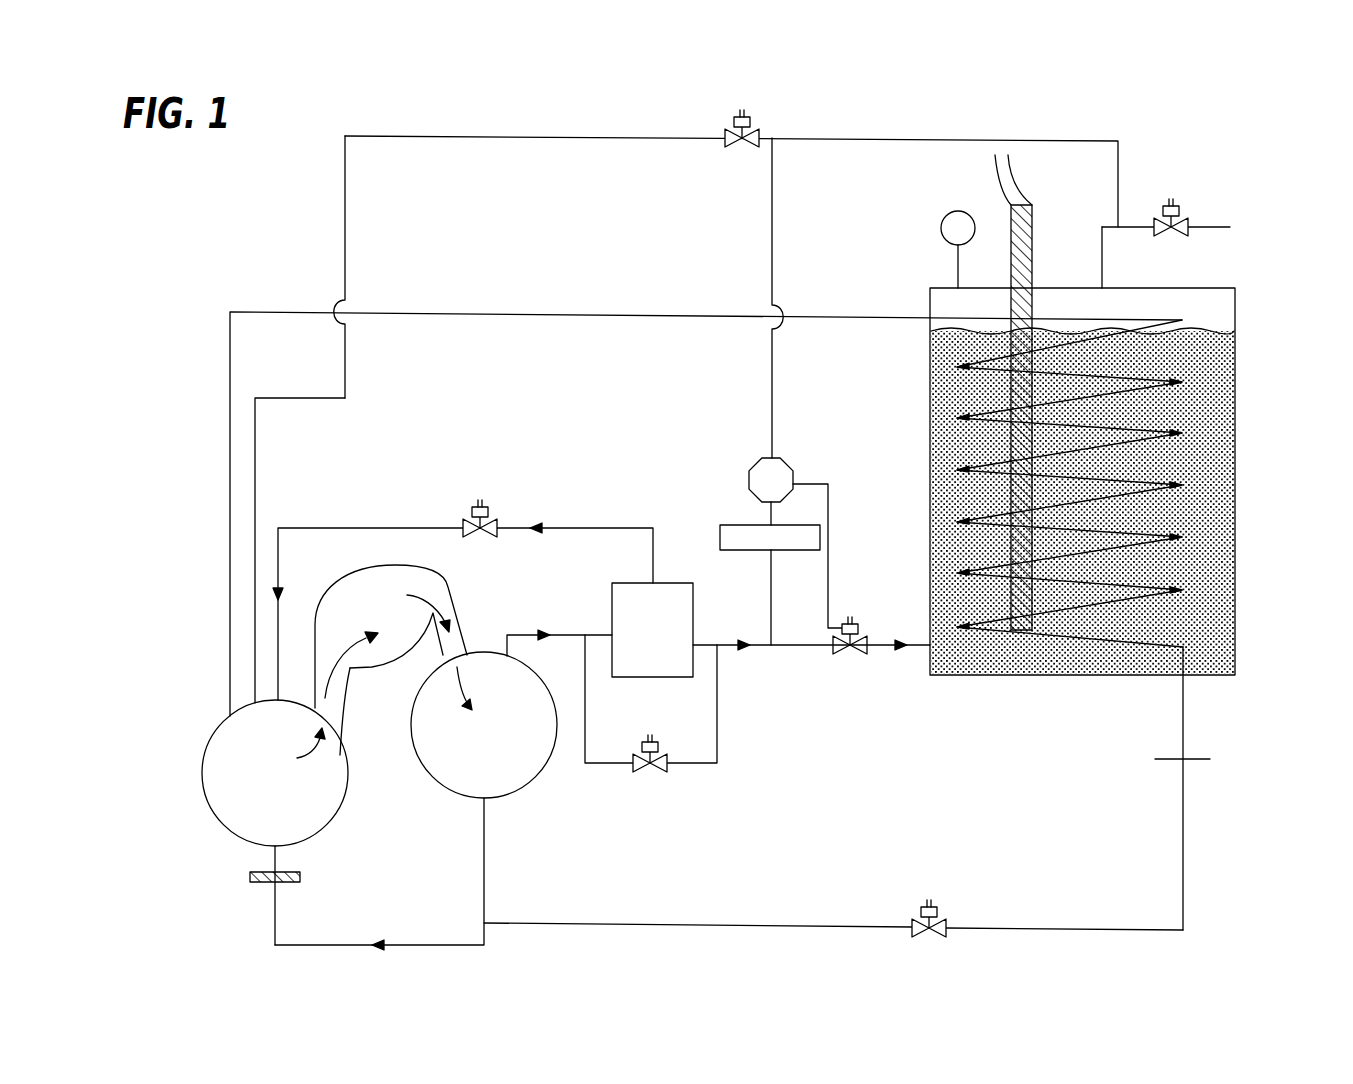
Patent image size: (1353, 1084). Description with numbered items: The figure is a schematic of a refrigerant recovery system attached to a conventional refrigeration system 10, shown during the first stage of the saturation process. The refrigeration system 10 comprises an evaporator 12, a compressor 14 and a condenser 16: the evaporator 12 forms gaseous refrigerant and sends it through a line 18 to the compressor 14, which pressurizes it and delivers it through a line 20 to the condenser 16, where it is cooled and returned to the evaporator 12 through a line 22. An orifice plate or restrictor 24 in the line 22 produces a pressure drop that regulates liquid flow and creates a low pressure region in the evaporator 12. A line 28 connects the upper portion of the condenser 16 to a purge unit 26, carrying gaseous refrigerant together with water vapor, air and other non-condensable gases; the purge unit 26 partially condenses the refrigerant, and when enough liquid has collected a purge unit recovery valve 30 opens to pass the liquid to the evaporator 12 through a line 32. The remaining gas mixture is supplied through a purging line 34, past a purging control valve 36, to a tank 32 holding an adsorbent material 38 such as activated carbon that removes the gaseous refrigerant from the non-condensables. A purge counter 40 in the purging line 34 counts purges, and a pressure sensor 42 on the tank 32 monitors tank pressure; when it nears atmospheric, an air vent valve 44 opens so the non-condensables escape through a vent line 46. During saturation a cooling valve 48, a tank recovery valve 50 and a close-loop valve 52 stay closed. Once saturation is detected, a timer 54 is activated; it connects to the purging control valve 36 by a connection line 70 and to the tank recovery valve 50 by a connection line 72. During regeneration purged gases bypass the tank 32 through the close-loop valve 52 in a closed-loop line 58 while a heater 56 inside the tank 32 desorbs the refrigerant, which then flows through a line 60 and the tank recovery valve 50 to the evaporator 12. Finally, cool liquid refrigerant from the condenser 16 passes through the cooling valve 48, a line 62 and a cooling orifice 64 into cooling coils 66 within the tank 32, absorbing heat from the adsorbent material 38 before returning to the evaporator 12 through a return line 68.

The refrigeration system 10 is at (208, 710).
The evaporator 12 is at (335, 820).
The compressor 14 is at (372, 668).
The condenser 16 is at (523, 787).
The line 18 is at (340, 712).
The line 20 is at (462, 623).
The line 22 is at (484, 893).
The orifice plate or restrictor 24 is at (263, 883).
The purge unit 26 is at (612, 606).
The line 28 is at (510, 643).
The purge unit recovery valve 30 is at (465, 519).
The tank 32 is at (322, 528).
The purging line 34 is at (718, 645).
The purging control valve 36 is at (854, 624).
The adsorbent material 38 is at (1235, 330).
The purge counter 40 is at (720, 528).
The pressure sensor 42 is at (941, 228).
The air vent valve 44 is at (1180, 208).
The vent line 46 is at (1102, 270).
The cooling valve 48 is at (912, 923).
The tank recovery valve 50 is at (762, 131).
The close-loop valve 52 is at (660, 773).
The timer 54 is at (789, 463).
The heater 56 is at (1033, 240).
The closed-loop line 58 is at (587, 703).
The line 60 is at (345, 170).
The line 62 is at (1183, 910).
The cooling orifice 64 is at (1207, 760).
The cooling coils 66 is at (1150, 438).
The return line 68 is at (630, 312).
The connection line 70 is at (831, 518).
The connection line 72 is at (775, 222).